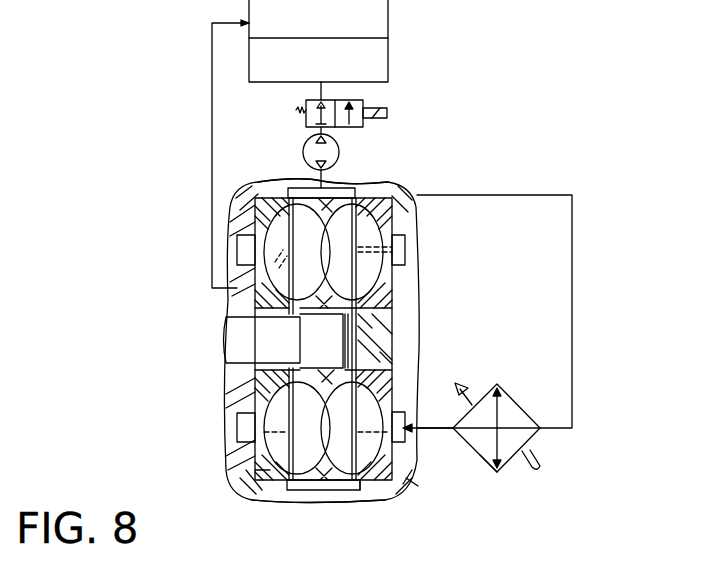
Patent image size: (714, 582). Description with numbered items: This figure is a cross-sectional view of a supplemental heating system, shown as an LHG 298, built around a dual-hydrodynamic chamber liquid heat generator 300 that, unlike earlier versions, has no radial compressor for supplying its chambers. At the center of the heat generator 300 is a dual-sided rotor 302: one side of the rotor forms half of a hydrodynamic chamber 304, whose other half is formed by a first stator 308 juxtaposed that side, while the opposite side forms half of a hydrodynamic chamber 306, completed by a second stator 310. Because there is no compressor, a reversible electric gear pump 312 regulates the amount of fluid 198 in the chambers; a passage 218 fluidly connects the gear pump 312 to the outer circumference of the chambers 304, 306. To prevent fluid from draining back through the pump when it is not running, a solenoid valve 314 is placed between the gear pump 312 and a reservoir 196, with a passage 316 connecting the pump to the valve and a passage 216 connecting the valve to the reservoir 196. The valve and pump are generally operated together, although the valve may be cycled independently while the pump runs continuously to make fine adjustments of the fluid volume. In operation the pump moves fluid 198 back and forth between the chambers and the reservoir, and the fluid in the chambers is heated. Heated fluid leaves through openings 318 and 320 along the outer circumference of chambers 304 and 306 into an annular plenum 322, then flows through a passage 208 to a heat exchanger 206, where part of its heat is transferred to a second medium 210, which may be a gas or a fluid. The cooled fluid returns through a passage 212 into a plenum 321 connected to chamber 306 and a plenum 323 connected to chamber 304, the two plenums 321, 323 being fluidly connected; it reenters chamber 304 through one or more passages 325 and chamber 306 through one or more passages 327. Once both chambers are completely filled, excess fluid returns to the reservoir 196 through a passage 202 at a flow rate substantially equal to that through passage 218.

The reservoir 196 is at (388, 63).
The fluid 198 is at (378, 52).
The passage 202 is at (212, 73).
The passage 216 is at (321, 93).
The solenoid valve 314 is at (365, 130).
The passage 316 is at (321, 131).
The reversible electric gear pump 312 is at (339, 152).
The passage 218 is at (318, 180).
The opening 318 is at (258, 183).
The dual-hydrodynamic chamber liquid heat generator 300 is at (437, 214).
The opening 320 is at (383, 182).
The LHG 298 is at (556, 82).
The hydrodynamic chamber 304 is at (255, 214).
The hydrodynamic chamber 306 is at (398, 282).
The passage 325 is at (270, 403).
The plenum 323 is at (240, 240).
The plenum 321 is at (405, 240).
The first stator 308 is at (262, 470).
The dual-sided rotor 302 is at (300, 508).
The annular plenum 322 is at (345, 490).
The second stator 310 is at (368, 490).
The passage 327 is at (418, 484).
The passage 208 is at (574, 210).
The passage 212 is at (441, 430).
The second medium 210 is at (533, 460).
The heat exchanger 206 is at (490, 465).